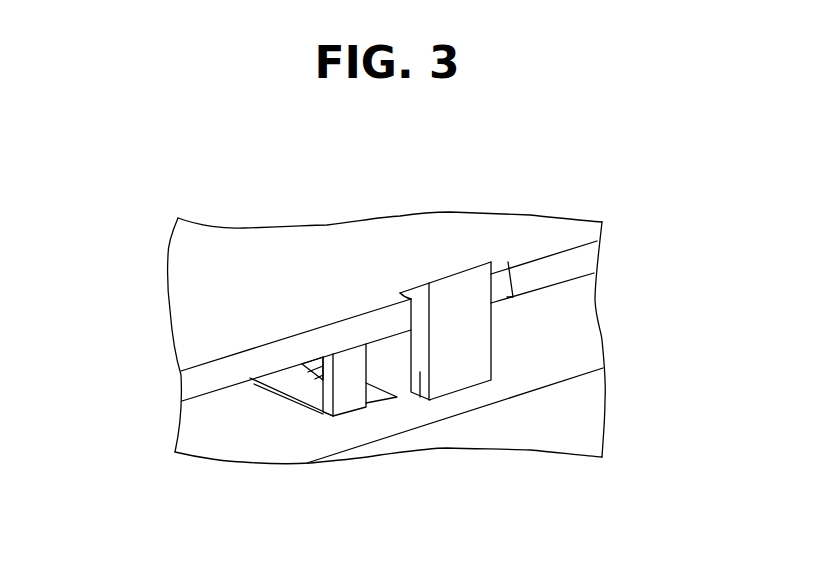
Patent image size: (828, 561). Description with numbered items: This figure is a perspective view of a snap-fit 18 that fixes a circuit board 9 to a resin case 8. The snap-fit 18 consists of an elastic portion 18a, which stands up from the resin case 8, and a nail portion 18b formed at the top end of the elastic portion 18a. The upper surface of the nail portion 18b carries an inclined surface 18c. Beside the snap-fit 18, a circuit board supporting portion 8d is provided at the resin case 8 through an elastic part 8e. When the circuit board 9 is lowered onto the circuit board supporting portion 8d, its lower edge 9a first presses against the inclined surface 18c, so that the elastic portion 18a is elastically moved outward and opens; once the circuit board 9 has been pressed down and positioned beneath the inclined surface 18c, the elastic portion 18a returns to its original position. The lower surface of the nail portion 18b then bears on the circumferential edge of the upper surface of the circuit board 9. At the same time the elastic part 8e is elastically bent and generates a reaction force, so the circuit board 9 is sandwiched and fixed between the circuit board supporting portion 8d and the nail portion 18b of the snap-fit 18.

The resin case 8 is at (575, 341).
The circuit board supporting portion 8d is at (323, 378).
The elastic part 8e is at (293, 379).
The circuit board 9 is at (530, 214).
The lower edge 9a is at (508, 262).
The snap-fit 18 is at (440, 355).
The elastic portion 18a is at (420, 400).
The nail portion 18b is at (418, 284).
The inclined surface 18c is at (418, 284).